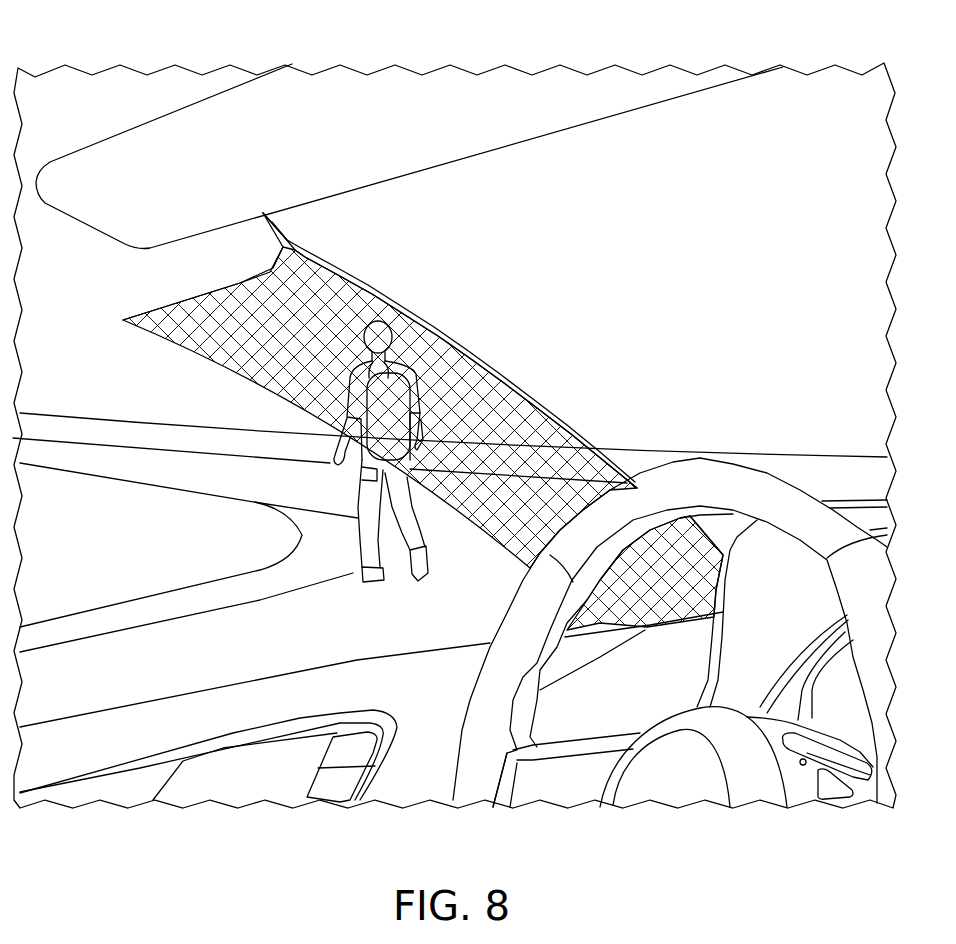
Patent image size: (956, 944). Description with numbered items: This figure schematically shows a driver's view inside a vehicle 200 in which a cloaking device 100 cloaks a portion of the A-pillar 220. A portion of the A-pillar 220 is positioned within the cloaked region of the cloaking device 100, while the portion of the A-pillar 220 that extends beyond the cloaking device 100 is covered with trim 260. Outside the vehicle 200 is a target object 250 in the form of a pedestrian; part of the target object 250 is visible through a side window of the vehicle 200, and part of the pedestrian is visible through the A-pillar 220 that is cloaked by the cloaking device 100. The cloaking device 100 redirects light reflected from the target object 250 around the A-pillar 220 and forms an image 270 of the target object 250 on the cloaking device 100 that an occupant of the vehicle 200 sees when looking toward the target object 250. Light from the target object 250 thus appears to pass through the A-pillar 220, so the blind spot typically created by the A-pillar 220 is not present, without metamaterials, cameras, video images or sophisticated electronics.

The vehicle 200 is at (118, 88).
The A-pillar 220 is at (112, 295).
The trim 260 is at (270, 248).
The cloaking device 100 is at (478, 347).
The image 270 is at (523, 390).
The target object 250 is at (372, 560).